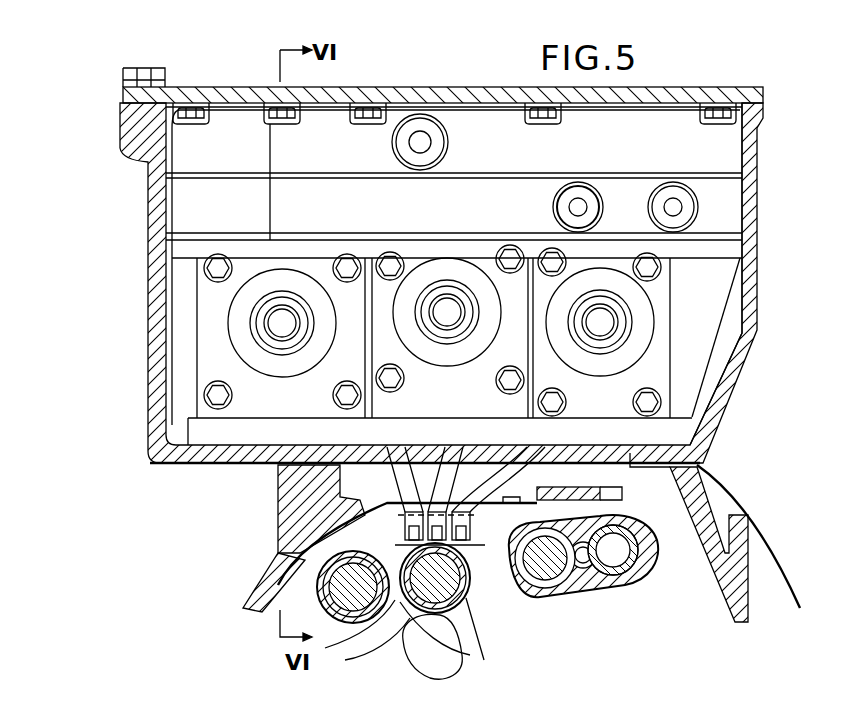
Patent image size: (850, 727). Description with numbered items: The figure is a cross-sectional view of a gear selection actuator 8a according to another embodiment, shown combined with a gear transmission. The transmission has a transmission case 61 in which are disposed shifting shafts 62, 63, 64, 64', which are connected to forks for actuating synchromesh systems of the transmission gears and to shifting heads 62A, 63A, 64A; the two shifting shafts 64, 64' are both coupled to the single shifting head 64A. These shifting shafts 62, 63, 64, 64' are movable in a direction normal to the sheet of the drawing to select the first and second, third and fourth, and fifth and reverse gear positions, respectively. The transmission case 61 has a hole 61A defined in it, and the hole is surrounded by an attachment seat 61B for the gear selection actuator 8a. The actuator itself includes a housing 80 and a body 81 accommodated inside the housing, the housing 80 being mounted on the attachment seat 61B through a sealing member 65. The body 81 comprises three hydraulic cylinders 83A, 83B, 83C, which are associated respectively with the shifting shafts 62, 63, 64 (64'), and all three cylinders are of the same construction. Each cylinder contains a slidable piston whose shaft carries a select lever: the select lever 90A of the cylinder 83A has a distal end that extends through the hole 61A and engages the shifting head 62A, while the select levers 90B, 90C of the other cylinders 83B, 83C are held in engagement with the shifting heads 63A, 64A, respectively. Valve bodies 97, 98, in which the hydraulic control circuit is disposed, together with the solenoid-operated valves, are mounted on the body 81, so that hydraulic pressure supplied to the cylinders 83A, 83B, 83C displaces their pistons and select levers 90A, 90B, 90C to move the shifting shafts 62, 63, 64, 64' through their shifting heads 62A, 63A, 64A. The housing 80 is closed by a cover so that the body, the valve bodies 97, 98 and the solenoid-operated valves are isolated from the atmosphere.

The gear selection actuator 8a is at (772, 280).
The housing 80 is at (152, 398).
The body 81 is at (703, 317).
The hydraulic cylinder 83A is at (268, 278).
The hydraulic cylinder 83B is at (437, 270).
The hydraulic cylinder 83C is at (601, 288).
The valve body 97 is at (589, 207).
The valve body 98 is at (456, 142).
The select lever 90A is at (390, 447).
The select lever 90B is at (450, 455).
The select lever 90C is at (540, 452).
The transmission case 61 is at (730, 572).
The hole 61A is at (492, 505).
The attachment seat 61B is at (290, 500).
The sealing member 65 is at (277, 468).
The shifting shaft 62 is at (358, 602).
The shifting head 62A is at (324, 587).
The shifting shaft 63 is at (472, 658).
The shifting head 63A is at (440, 604).
The shifting shaft 64 is at (583, 571).
The shifting head 64A is at (515, 565).
The shifting shaft 64' is at (636, 572).